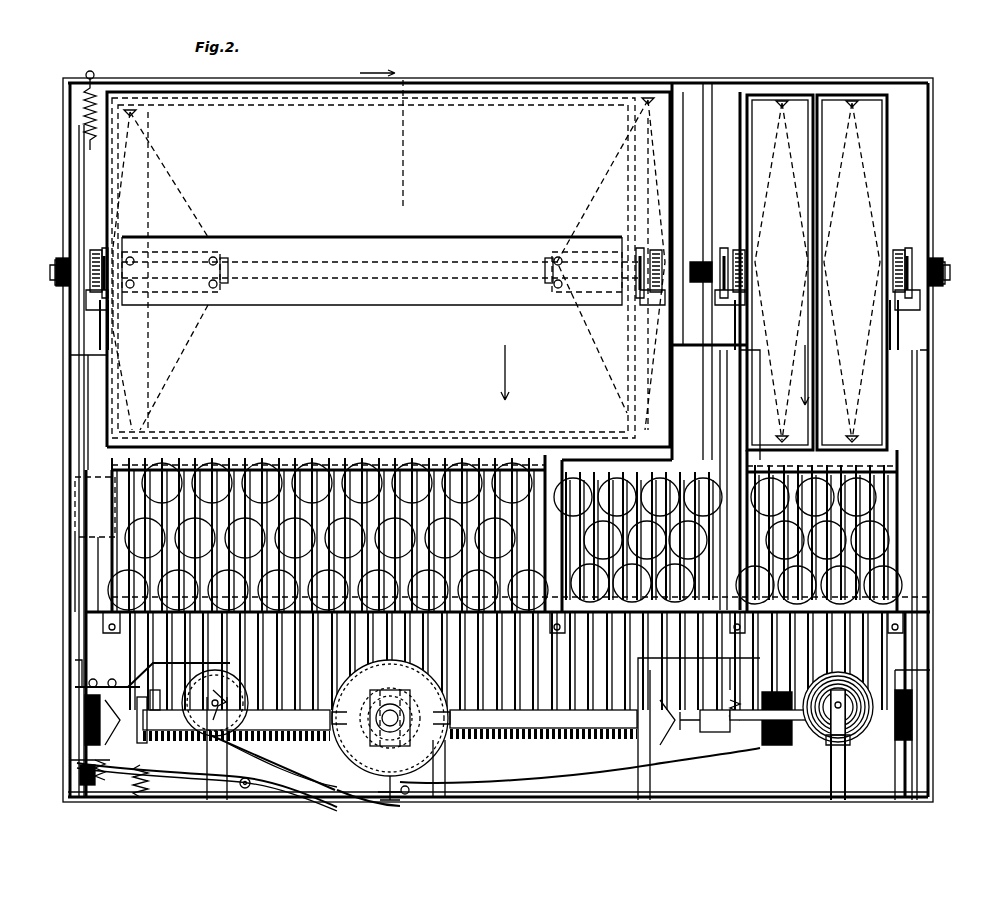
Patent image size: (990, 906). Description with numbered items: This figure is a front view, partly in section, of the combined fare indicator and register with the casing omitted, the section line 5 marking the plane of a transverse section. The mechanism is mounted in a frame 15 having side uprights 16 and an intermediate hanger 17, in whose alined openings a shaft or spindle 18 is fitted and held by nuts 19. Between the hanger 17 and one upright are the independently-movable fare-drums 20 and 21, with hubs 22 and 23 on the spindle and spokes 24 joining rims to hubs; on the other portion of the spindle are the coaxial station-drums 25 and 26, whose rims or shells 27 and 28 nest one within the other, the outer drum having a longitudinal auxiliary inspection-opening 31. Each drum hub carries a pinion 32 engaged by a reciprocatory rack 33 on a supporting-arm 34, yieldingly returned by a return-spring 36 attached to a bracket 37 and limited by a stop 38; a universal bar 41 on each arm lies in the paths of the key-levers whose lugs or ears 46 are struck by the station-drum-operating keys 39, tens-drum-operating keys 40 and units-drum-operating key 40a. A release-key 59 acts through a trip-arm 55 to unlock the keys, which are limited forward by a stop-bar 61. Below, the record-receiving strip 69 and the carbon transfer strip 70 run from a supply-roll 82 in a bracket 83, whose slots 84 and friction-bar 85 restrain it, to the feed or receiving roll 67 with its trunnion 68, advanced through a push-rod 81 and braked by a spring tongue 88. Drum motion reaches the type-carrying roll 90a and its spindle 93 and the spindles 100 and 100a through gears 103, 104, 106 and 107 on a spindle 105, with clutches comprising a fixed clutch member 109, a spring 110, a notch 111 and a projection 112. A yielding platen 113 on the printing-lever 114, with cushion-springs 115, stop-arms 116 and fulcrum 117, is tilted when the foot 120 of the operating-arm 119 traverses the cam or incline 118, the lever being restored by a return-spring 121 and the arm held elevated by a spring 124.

The section line 5 is at (384, 447).
The frame 15 is at (590, 83).
The side uprights 16 is at (66, 178).
The intermediate hanger 17 is at (704, 156).
The shaft or spindle 18 is at (56, 276).
The nuts 19 is at (58, 264).
The fare-drum 20 is at (780, 272).
The fare-drum 21 is at (852, 272).
The hub 22 is at (781, 270).
The hub 23 is at (852, 270).
The spokes 24 is at (813, 392).
The station-drum 25 is at (160, 200).
The station-drum 26 is at (632, 188).
The rim or shell 27 is at (333, 100).
The rim or shell 28 is at (372, 106).
The auxiliary inspection-opening 31 is at (326, 304).
The pinion 32 is at (98, 248).
The reciprocatory rack 33 is at (110, 315).
The supporting-arm 34 is at (86, 583).
The return-spring 36 is at (103, 627).
The bracket 37 is at (498, 640).
The stop 38 is at (88, 366).
The station-drum-operating keys 39 is at (384, 470).
The tens-drum-operating keys 40 is at (570, 480).
The units-drum-operating key 40a is at (880, 546).
The universal bar 41 is at (290, 470).
The lugs or ears 46 is at (190, 460).
The trip-arm 55 is at (95, 510).
The release-key 59 is at (98, 562).
The stop-bar 61 is at (86, 608).
The feed or receiving roll 67 is at (215, 703).
The trunnion 68 is at (216, 705).
The record-receiving strip 69 is at (530, 797).
The transfer strip or ribbon 70 is at (512, 783).
The push-rod 81 is at (86, 683).
The supply-roll 82 is at (815, 738).
The bracket 83 is at (836, 790).
The slots 84 is at (850, 732).
The friction-bar 85 is at (830, 746).
The spring tongue 88 is at (207, 738).
The type-carrying roll 90a is at (391, 716).
The spindle 93 is at (388, 722).
The spindle 100 is at (582, 715).
The spindle 100a is at (292, 730).
The gear 103 is at (85, 706).
The gear 104 is at (85, 730).
The spindle 105 is at (938, 404).
The gear 106 is at (86, 293).
The gear 107 is at (100, 256).
The fixed clutch member 109 is at (695, 733).
The spring 110 is at (158, 726).
The notch 111 is at (668, 735).
The projection 112 is at (100, 782).
The yielding platen 113 is at (412, 798).
The printing-lever 114 is at (322, 800).
The cushion-springs 115 is at (380, 808).
The stop-arms 116 is at (295, 785).
The fulcrum 117 is at (245, 790).
The cam or incline 118 is at (88, 787).
The operating-arm 119 is at (80, 205).
The foot 120 is at (68, 798).
The return-spring 121 is at (141, 798).
The spring 124 is at (96, 100).